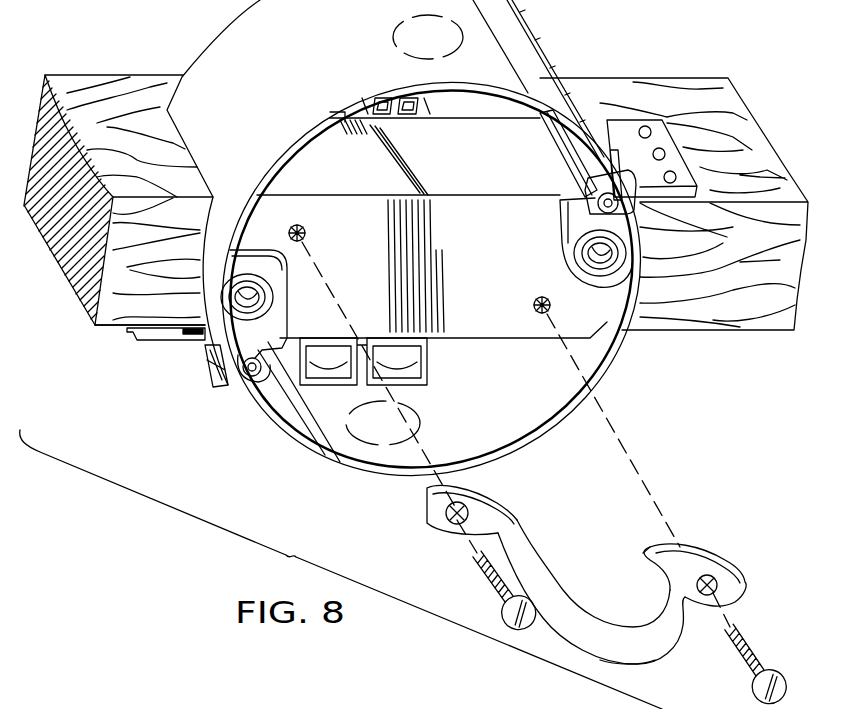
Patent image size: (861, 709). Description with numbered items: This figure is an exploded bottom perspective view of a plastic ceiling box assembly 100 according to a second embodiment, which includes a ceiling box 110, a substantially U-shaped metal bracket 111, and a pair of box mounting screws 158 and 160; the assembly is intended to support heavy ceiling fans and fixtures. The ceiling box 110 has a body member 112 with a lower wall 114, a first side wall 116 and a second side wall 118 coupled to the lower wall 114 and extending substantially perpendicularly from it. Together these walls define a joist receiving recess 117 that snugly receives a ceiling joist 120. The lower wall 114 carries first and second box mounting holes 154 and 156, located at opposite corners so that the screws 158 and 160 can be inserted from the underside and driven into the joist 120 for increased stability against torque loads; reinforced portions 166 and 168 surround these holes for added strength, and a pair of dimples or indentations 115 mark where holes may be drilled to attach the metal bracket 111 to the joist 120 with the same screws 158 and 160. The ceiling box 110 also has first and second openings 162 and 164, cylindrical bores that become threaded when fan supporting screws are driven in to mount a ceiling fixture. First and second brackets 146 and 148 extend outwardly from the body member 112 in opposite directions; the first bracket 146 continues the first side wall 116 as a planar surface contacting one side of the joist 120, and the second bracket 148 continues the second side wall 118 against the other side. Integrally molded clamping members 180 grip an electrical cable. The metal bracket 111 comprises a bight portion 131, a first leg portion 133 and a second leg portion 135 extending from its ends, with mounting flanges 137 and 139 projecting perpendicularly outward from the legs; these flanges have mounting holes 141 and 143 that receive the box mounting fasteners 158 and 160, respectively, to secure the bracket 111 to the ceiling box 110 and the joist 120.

The ceiling box assembly 100 is at (636, 418).
The ceiling box 110 is at (620, 352).
The U-shaped metal bracket 111 is at (640, 556).
The body member 112 is at (556, 424).
The lower wall 114 is at (456, 248).
The dimples or indentations 115 is at (306, 233).
The first side wall 116 is at (510, 345).
The joist receiving recess 117 is at (166, 135).
The second side wall 118 is at (451, 169).
The ceiling joist 120 is at (93, 332).
The bight portion 131 is at (660, 660).
The first leg portion 133 is at (541, 545).
The second leg portion 135 is at (638, 588).
The mounting flange 137 is at (494, 490).
The mounting flange 139 is at (722, 558).
The mounting hole 141 is at (432, 540).
The mounting hole 143 is at (720, 586).
The first bracket 146 is at (148, 342).
The second bracket 148 is at (618, 118).
The first box mounting hole 154 is at (265, 302).
The second box mounting hole 156 is at (598, 256).
The box mounting screw 158 is at (472, 592).
The box mounting screw 160 is at (752, 645).
The first opening 162 is at (246, 374).
The second opening 164 is at (560, 234).
The reinforced portion 166 is at (258, 250).
The reinforced portion 168 is at (562, 218).
The clamping members 180 is at (432, 110).